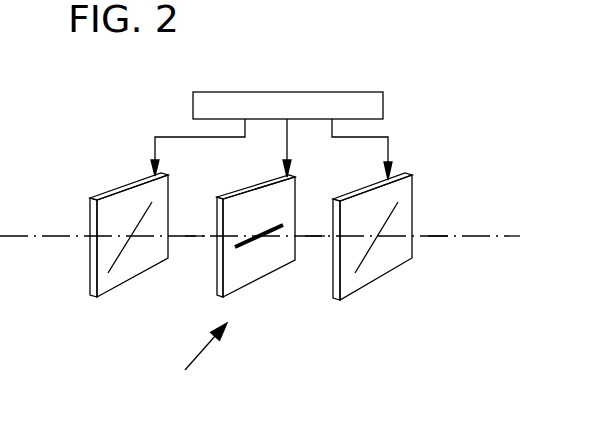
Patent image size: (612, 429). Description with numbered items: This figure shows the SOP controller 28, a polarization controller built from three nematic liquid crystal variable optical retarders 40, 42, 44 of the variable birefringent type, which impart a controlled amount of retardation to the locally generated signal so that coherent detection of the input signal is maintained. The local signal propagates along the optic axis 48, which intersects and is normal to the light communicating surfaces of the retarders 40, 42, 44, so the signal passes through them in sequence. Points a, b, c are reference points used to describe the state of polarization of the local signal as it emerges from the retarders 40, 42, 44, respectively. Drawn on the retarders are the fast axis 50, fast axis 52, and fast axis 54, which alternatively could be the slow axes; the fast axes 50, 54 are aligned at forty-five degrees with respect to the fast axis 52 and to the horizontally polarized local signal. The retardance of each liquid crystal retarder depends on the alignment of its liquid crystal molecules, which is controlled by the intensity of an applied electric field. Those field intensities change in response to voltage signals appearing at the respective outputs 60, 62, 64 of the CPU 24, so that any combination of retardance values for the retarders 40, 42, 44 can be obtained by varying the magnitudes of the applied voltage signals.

The CPU 24 is at (242, 92).
The SOP controller 28 is at (191, 358).
The nematic liquid crystal variable optical retarder 40 is at (113, 288).
The nematic liquid crystal variable optical retarder 42 is at (240, 288).
The nematic liquid crystal variable optical retarder 44 is at (357, 288).
The optic axis 48 is at (477, 236).
The fast axis 50 is at (137, 220).
The fast axis 52 is at (247, 232).
The fast axis 54 is at (382, 222).
The output of CPU 60 is at (167, 136).
The output of CPU 62 is at (288, 128).
The output of CPU 64 is at (388, 137).
The reference point a is at (194, 236).
The reference point b is at (315, 236).
The reference point c is at (438, 236).